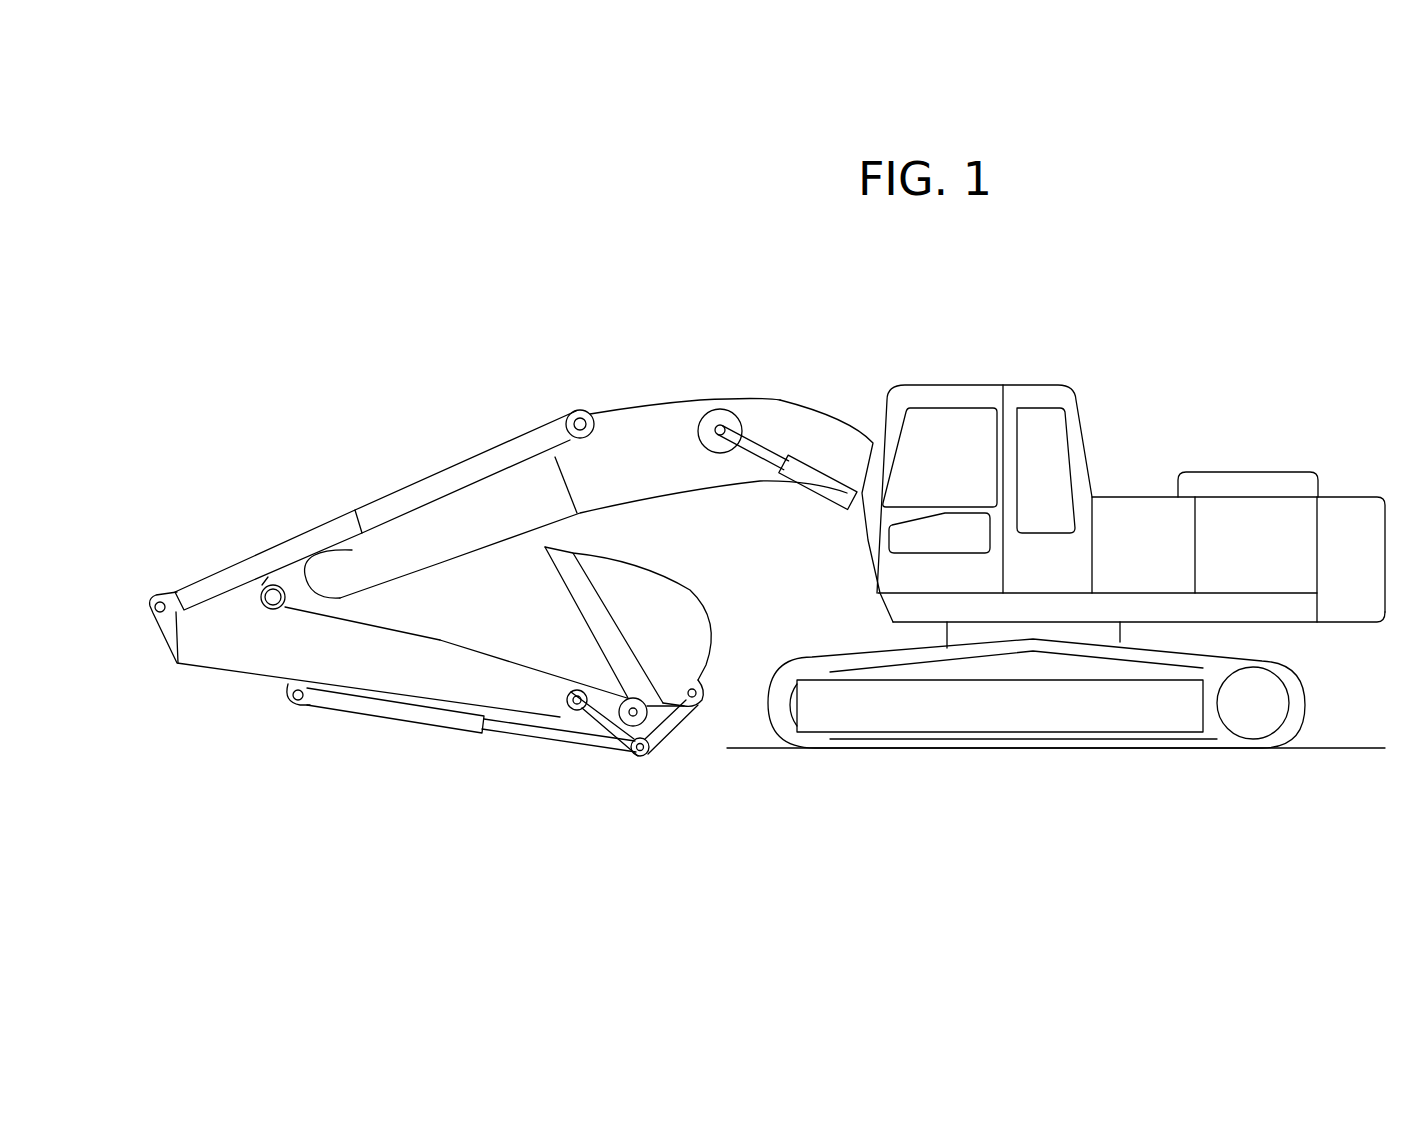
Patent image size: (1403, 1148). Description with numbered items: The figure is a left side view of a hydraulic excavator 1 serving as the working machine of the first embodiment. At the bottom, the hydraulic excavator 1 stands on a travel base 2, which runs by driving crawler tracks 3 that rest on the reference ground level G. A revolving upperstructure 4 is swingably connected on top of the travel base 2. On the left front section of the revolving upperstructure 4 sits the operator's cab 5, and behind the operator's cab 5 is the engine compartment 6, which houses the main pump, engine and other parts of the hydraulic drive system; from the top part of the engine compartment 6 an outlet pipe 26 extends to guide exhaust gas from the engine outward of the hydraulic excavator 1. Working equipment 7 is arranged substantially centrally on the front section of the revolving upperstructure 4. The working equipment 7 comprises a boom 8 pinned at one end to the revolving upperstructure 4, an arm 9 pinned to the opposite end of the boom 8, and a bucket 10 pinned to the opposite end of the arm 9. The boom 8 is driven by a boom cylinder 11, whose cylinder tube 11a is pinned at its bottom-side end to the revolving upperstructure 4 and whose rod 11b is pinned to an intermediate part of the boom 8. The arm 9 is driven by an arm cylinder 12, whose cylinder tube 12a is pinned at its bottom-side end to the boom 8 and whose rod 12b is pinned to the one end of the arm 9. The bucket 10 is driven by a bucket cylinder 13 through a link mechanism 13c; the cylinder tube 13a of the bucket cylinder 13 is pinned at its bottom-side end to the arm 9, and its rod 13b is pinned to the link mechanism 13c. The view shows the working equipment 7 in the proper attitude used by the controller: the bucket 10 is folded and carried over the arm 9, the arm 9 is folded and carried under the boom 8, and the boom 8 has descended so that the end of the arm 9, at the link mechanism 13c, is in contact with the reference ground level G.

The hydraulic excavator 1 is at (594, 208).
The travel base 2 is at (1118, 717).
The crawler tracks 3 is at (1203, 750).
The revolving upperstructure 4 is at (1013, 378).
The operator's cab 5 is at (1041, 385).
The engine compartment 6 is at (1268, 508).
The outlet pipe 26 is at (1218, 470).
The working equipment 7 is at (577, 463).
The boom 8 is at (667, 418).
The arm 9 is at (265, 663).
The bucket 10 is at (695, 613).
The boom cylinder 11 is at (781, 512).
The cylinder tube 11a is at (826, 513).
The rod 11b is at (757, 457).
The arm cylinder 12 is at (384, 501).
The cylinder tube 12a is at (432, 480).
The rod 12b is at (290, 542).
The bucket cylinder 13 is at (508, 762).
The cylinder tube 13a is at (404, 722).
The rod 13b is at (540, 740).
The link mechanism 13c is at (646, 757).
The reference ground level G is at (753, 750).